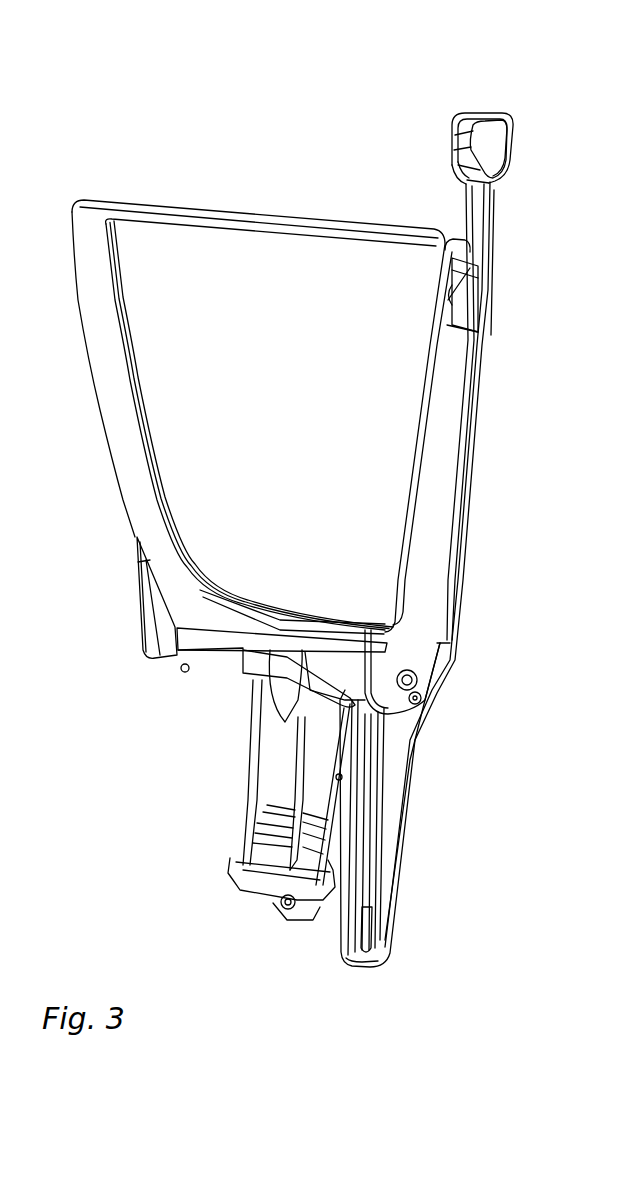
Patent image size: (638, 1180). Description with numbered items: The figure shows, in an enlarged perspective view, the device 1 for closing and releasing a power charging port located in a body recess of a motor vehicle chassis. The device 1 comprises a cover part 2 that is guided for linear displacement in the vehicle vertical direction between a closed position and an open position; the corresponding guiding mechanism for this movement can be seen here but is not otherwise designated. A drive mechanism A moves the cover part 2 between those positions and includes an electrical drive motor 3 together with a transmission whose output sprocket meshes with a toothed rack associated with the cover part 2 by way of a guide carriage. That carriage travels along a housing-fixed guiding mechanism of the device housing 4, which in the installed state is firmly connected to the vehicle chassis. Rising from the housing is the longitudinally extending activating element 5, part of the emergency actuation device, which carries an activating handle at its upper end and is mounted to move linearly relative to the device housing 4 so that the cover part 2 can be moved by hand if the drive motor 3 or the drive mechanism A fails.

The device 1 is at (137, 88).
The cover part 2 is at (279, 260).
The electrical drive motor 3 is at (283, 788).
The device housing 4 is at (327, 669).
The activating element 5 is at (480, 505).
The drive mechanism A is at (130, 801).